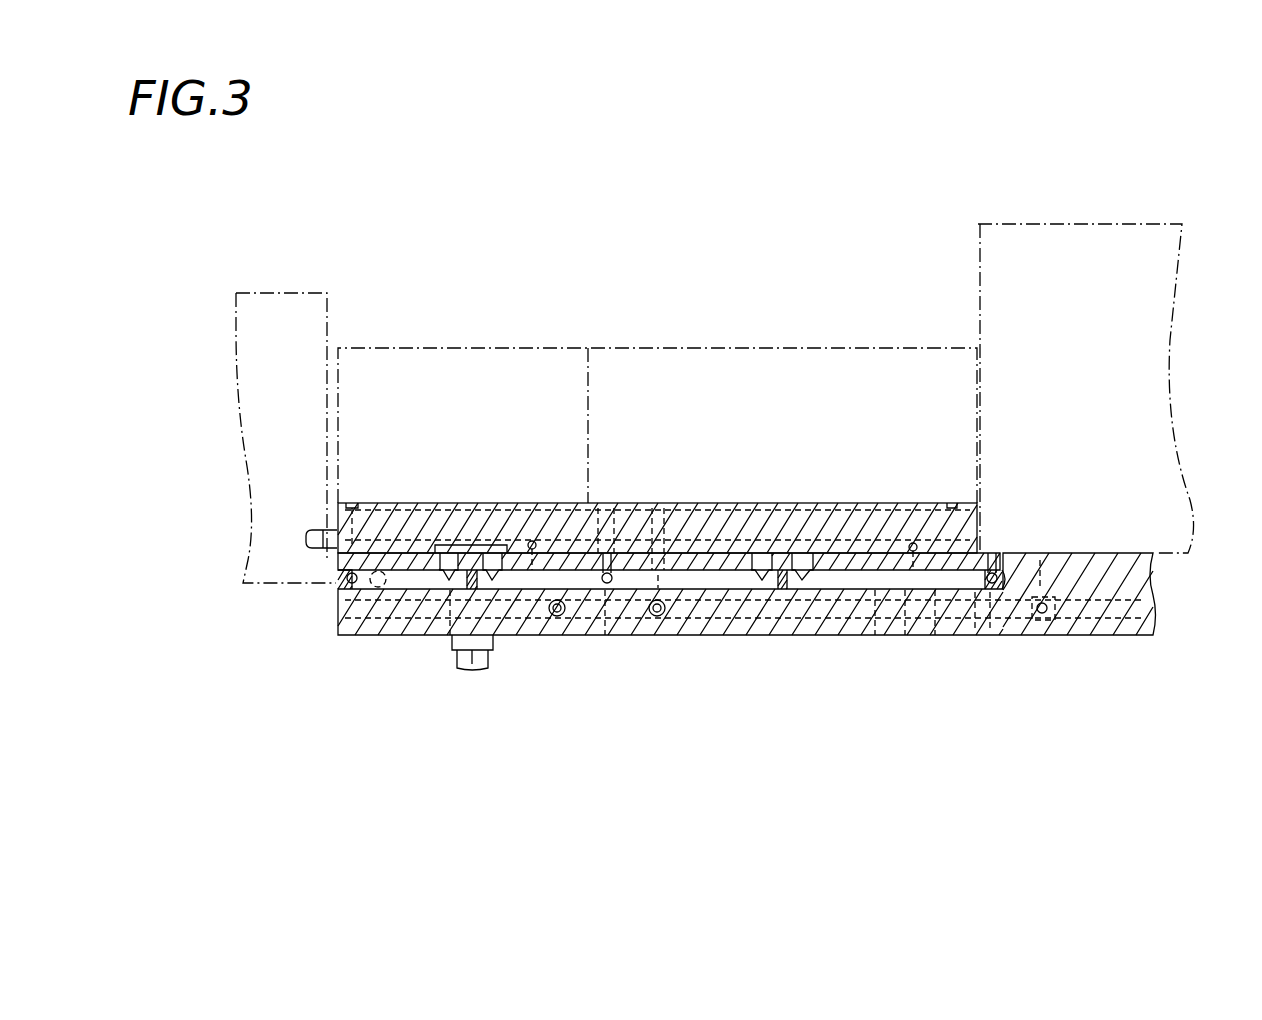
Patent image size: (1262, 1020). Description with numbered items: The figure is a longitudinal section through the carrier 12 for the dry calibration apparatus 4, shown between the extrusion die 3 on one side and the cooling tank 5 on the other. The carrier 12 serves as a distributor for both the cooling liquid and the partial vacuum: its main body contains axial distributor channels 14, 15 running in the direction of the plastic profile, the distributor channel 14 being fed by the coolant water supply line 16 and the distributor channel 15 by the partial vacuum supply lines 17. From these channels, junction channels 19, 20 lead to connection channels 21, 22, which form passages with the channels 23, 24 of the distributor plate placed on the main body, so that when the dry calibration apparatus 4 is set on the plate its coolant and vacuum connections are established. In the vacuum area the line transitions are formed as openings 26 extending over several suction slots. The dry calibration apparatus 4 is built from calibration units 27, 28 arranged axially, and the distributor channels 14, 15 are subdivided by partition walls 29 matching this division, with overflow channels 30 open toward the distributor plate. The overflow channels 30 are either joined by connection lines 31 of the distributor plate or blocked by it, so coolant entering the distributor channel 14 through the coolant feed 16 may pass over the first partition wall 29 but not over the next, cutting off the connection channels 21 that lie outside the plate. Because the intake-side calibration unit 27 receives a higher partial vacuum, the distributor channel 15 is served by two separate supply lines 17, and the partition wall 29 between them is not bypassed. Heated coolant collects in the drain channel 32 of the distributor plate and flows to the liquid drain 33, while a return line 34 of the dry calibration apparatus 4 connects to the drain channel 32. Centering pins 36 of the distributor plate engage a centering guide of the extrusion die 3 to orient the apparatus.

The extrusion die 3 is at (277, 323).
The dry calibration apparatus 4 is at (503, 322).
The cooling tank 5 is at (1094, 280).
The carrier 12 is at (1129, 687).
The axial distributor channel 14 is at (842, 580).
The axial distributor channel 15 is at (982, 637).
The supply line 16 is at (370, 595).
The supply line 17 is at (553, 615).
The junction channel 19 is at (338, 582).
The junction channel 20 is at (557, 617).
The connection channel 21 is at (338, 559).
The connection channel 22 is at (590, 500).
The channel 23 is at (352, 503).
The channel 24 is at (660, 503).
The opening 26 is at (478, 508).
The calibration unit 27 is at (547, 363).
The calibration unit 28 is at (812, 370).
The partition wall 29 is at (450, 600).
The overflow channel 30 is at (490, 555).
The connection line 31 is at (503, 545).
The drain channel 32 is at (948, 503).
The liquid drain 33 is at (473, 665).
The return line 34 is at (534, 541).
The centering pin 36 is at (317, 542).